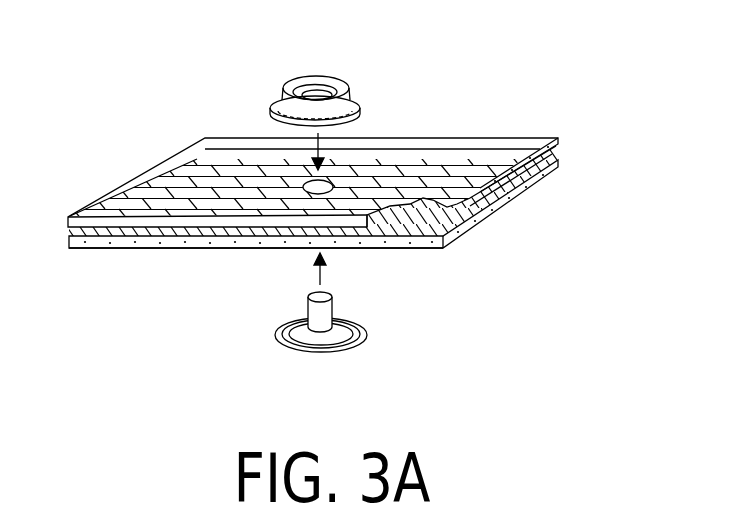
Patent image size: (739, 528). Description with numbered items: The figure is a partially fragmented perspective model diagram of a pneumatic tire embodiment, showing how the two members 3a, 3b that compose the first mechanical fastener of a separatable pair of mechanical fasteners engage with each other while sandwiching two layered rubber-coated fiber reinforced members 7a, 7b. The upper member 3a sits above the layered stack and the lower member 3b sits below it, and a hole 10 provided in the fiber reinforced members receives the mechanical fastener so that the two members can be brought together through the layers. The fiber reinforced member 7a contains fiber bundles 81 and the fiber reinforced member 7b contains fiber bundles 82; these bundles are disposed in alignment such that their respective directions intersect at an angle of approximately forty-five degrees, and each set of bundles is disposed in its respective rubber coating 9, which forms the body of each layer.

The member of first mechanical fastener 3a is at (318, 78).
The member of first mechanical fastener 3b is at (322, 336).
The hole 10 is at (320, 180).
The fiber bundles 81 is at (505, 152).
The fiber bundles 82 is at (455, 207).
The fiber reinforced member 7a is at (562, 141).
The fiber reinforced member 7b is at (562, 163).
The rubber coating 9 is at (143, 244).